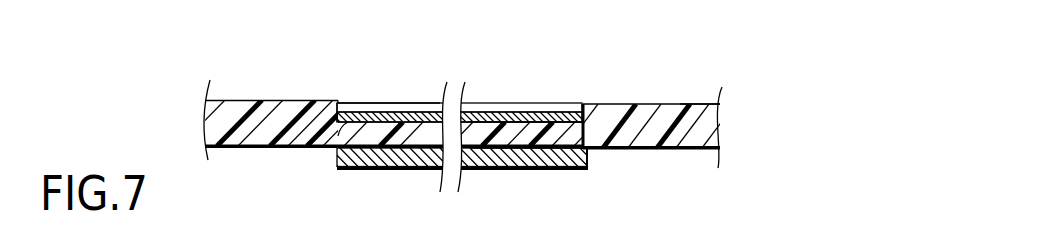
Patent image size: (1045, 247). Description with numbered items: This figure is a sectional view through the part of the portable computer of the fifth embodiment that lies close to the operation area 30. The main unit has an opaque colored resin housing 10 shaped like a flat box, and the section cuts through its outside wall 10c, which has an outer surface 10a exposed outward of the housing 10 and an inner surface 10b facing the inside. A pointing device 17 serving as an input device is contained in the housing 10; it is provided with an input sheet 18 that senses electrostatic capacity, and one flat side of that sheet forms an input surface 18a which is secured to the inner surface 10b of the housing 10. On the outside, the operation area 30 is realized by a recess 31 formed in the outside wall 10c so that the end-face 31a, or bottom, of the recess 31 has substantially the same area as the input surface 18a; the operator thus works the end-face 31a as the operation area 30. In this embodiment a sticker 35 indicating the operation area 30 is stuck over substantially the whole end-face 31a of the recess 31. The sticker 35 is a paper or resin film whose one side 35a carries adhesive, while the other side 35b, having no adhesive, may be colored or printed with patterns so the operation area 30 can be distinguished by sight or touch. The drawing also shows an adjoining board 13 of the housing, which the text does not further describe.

The housing 10 is at (651, 104).
The outer surface 10a is at (713, 100).
The inner surface 10b is at (661, 150).
The outside wall 10c is at (697, 128).
The second wiring board 13 is at (240, 100).
The pointing device 17 is at (357, 170).
The input sheet 18 is at (411, 168).
The input surface 18a is at (497, 170).
The operation area 30 is at (410, 122).
The recess 31 is at (580, 104).
The end-face of the recess 31a is at (522, 117).
The sticker 35 is at (470, 117).
The adhesive side of the sticker 35a is at (320, 147).
The non-adhesive side of the sticker 35b is at (350, 103).